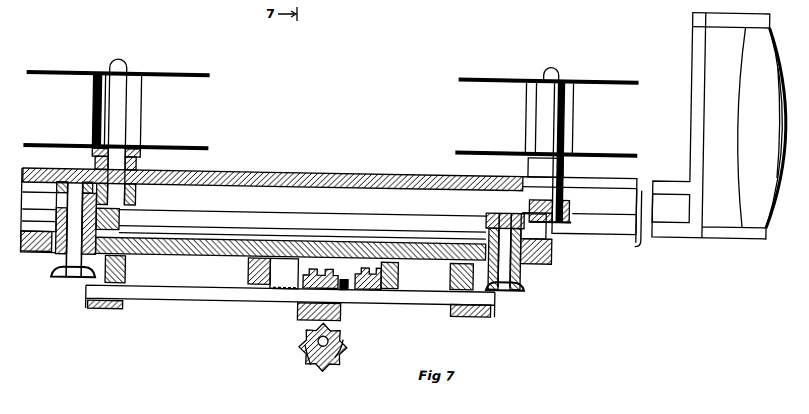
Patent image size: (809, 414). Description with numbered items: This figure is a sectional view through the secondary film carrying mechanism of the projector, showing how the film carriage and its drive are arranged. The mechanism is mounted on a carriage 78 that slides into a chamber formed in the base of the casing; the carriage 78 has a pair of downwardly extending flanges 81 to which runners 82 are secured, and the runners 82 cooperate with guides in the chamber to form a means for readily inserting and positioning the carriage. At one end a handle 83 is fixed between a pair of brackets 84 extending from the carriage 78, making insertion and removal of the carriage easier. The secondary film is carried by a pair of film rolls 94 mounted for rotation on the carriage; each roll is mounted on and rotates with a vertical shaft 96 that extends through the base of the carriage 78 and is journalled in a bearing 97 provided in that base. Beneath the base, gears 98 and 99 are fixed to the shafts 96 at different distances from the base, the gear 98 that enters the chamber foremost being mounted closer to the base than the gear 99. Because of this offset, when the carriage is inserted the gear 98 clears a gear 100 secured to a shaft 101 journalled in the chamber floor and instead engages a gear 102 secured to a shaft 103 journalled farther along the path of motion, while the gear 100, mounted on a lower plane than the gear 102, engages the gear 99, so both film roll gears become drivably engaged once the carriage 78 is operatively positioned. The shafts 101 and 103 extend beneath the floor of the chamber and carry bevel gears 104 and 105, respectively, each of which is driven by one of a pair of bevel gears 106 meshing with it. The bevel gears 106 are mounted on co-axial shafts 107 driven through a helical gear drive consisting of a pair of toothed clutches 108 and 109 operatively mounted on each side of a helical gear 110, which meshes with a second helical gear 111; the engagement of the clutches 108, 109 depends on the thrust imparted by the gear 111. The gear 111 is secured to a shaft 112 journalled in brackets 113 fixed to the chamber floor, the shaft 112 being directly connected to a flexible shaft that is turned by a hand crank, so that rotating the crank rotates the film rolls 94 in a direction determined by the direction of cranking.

The carriage 78 is at (580, 223).
The downwardly extending flanges 81 is at (640, 221).
The runners 82 is at (225, 224).
The handle 83 is at (753, 63).
The brackets 84 is at (720, 220).
The film rolls 94 is at (174, 72).
The vertical shafts 96 is at (117, 124).
The bearings 97 is at (133, 163).
The gear 98 is at (140, 190).
The gear 99 is at (570, 214).
The gear 100 is at (498, 207).
The shaft 101 is at (512, 274).
The gear 102 is at (62, 192).
The shaft 103 is at (100, 220).
The bevel gear 104 is at (522, 281).
The bevel gear 105 is at (55, 271).
The bevel gears 106 is at (93, 307).
The co-axial shafts 107 is at (188, 289).
The toothed clutch 108 is at (302, 272).
The toothed clutch 109 is at (372, 273).
The helical gear 110 is at (345, 312).
The helical gear 111 is at (345, 356).
The shaft 112 is at (313, 360).
The brackets 113 is at (350, 349).